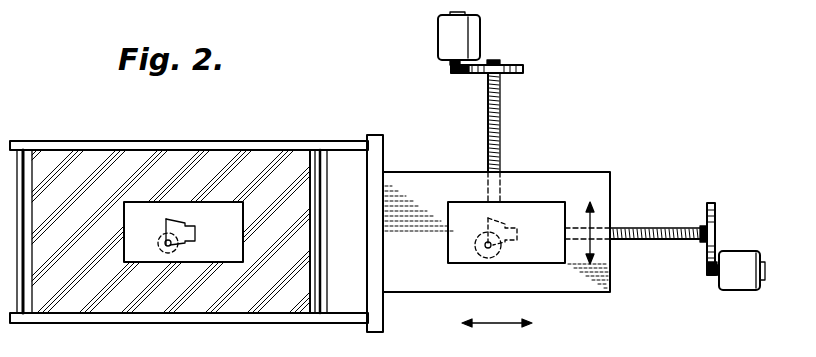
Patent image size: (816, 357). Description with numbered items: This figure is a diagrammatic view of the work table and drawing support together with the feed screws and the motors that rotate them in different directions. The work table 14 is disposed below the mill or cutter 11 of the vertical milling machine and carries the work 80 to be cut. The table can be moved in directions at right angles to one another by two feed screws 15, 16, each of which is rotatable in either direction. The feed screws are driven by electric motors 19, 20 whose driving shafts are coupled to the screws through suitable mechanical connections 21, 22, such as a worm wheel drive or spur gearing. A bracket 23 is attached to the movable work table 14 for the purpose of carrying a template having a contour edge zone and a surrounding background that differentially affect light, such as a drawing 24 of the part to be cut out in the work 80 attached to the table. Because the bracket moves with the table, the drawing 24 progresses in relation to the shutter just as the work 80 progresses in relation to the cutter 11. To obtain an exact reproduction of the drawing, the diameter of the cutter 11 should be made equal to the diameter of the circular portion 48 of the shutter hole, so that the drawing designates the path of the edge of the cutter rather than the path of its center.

The mill or cutter 11 is at (487, 246).
The work table 14 is at (556, 285).
The feed screw 15 is at (501, 136).
The feed screw 16 is at (650, 241).
The electric motor 19 is at (438, 33).
The electric motor 20 is at (740, 291).
The mechanical connection 21 is at (477, 75).
The mechanical connection 22 is at (718, 248).
The bracket 23 is at (192, 323).
The drawing 24 is at (201, 205).
The circular portion of the shutter hole 48 is at (165, 244).
The work 80 is at (516, 220).